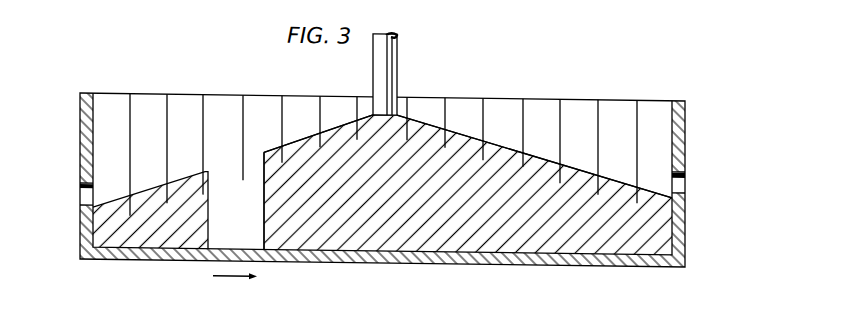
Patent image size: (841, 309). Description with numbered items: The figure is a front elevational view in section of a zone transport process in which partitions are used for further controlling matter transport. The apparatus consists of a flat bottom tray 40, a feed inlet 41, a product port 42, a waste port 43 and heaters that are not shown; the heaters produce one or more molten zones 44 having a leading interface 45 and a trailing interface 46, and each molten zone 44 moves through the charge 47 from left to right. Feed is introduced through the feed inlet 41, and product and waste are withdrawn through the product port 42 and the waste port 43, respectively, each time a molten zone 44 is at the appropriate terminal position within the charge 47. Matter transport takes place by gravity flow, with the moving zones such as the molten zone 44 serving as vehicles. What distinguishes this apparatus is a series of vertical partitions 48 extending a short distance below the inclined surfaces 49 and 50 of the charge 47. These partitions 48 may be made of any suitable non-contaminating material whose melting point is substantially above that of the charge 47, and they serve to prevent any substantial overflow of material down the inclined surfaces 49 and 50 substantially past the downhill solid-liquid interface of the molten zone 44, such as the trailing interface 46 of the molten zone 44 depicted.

The flat bottom tray 40 is at (80, 112).
The feed inlet 41 is at (398, 39).
The product port 42 is at (80, 189).
The waste port 43 is at (686, 168).
The molten zone 44 is at (218, 238).
The leading interface 45 is at (264, 216).
The trailing interface 46 is at (208, 216).
The charge 47 is at (578, 239).
The vertical partitions 48 is at (242, 111).
The inclined surface 49 is at (337, 124).
The inclined surface 50 is at (608, 170).